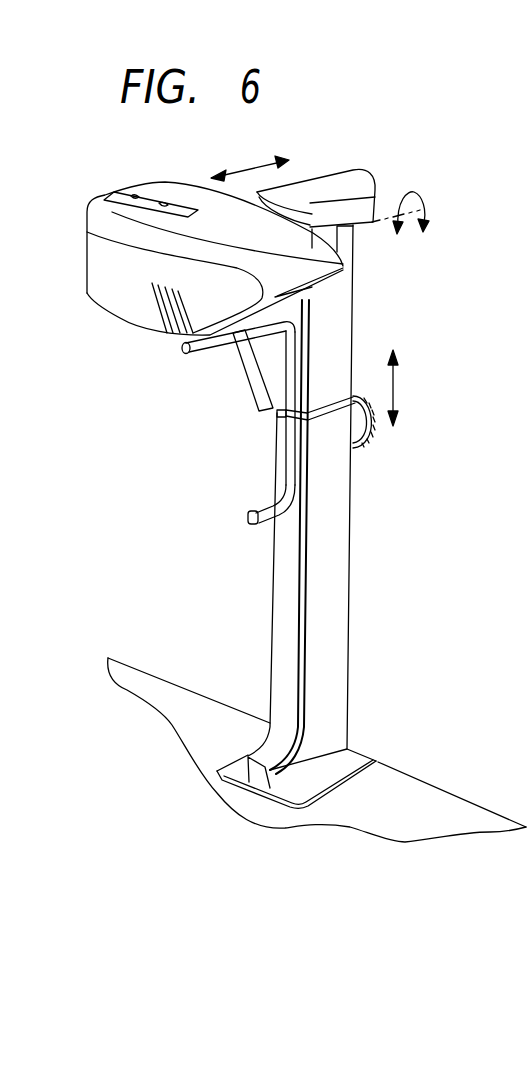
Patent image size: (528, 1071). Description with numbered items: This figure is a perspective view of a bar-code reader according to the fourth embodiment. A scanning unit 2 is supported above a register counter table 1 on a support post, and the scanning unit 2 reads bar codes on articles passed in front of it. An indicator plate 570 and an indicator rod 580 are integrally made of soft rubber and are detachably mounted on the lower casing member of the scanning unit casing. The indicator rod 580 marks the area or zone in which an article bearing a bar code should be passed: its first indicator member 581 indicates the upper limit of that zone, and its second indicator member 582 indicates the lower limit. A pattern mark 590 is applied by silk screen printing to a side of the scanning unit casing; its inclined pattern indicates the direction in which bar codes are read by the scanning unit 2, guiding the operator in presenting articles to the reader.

The register counter table 1 is at (185, 698).
The scanning unit 2 is at (170, 182).
The indicator plate 570 is at (238, 373).
The indicator rod 580 is at (198, 357).
The first indicator member 581 is at (182, 355).
The second indicator member 582 is at (252, 522).
The pattern mark 590 is at (150, 318).